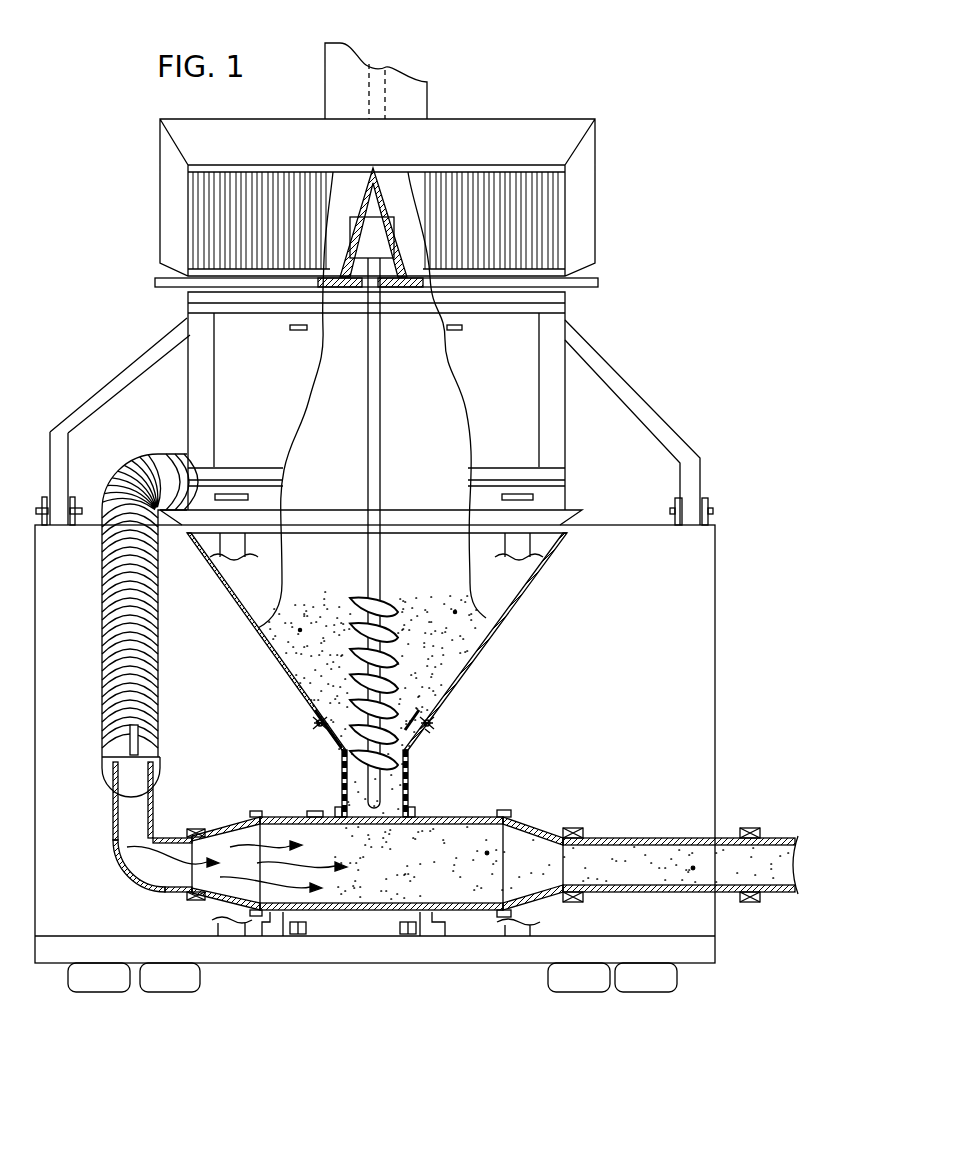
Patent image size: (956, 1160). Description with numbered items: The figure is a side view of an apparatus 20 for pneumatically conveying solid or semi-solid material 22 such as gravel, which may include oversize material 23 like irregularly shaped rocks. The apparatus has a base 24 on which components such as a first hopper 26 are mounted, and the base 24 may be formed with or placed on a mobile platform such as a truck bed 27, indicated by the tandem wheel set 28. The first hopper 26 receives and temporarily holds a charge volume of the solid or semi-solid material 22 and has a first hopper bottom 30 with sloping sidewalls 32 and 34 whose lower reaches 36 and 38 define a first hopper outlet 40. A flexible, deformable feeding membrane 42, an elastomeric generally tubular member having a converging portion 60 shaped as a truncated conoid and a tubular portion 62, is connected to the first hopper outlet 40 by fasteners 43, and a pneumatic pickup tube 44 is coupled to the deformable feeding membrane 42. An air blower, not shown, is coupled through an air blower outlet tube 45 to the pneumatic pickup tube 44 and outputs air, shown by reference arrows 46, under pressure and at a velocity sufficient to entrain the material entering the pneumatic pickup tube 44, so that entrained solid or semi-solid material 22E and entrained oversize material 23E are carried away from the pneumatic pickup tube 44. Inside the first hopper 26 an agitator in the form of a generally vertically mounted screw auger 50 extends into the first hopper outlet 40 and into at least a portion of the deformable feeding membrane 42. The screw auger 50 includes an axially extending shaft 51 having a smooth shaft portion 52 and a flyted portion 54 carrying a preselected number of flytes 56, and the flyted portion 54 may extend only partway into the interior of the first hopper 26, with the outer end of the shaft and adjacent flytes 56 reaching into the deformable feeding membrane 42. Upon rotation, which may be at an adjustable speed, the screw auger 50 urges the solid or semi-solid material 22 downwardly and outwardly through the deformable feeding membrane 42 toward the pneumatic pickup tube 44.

The apparatus 20 is at (540, 63).
The solid or semi-solid material 22 is at (283, 652).
The entrained solid or semi-solid material 22E is at (765, 805).
The oversize material 23 is at (455, 612).
The entrained oversize material 23E is at (487, 853).
The base 24 is at (715, 555).
The first hopper 26 is at (387, 637).
The truck bed 27 is at (713, 950).
The tandem wheel set 28 is at (200, 977).
The first hopper bottom 30 is at (473, 660).
The sloping sidewall 32 is at (483, 613).
The sloping sidewall 34 is at (286, 657).
The lower reach of sloping sidewall 36 is at (427, 722).
The lower reach of sloping sidewall 38 is at (327, 705).
The first hopper outlet 40 is at (410, 710).
The deformable feeding membrane 42 is at (412, 781).
The fasteners 43 is at (318, 725).
The pneumatic pickup tube 44 is at (473, 818).
The air blower outlet tube 45 is at (163, 737).
The reference arrows 46 is at (127, 853).
The screw auger 50 is at (380, 533).
The axially extending shaft 51 is at (370, 833).
The smooth shaft portion 52 is at (380, 437).
The flyted portion 54 is at (393, 606).
The flytes 56 is at (350, 612).
The converging portion 60 is at (413, 745).
The tubular portion 62 is at (420, 790).